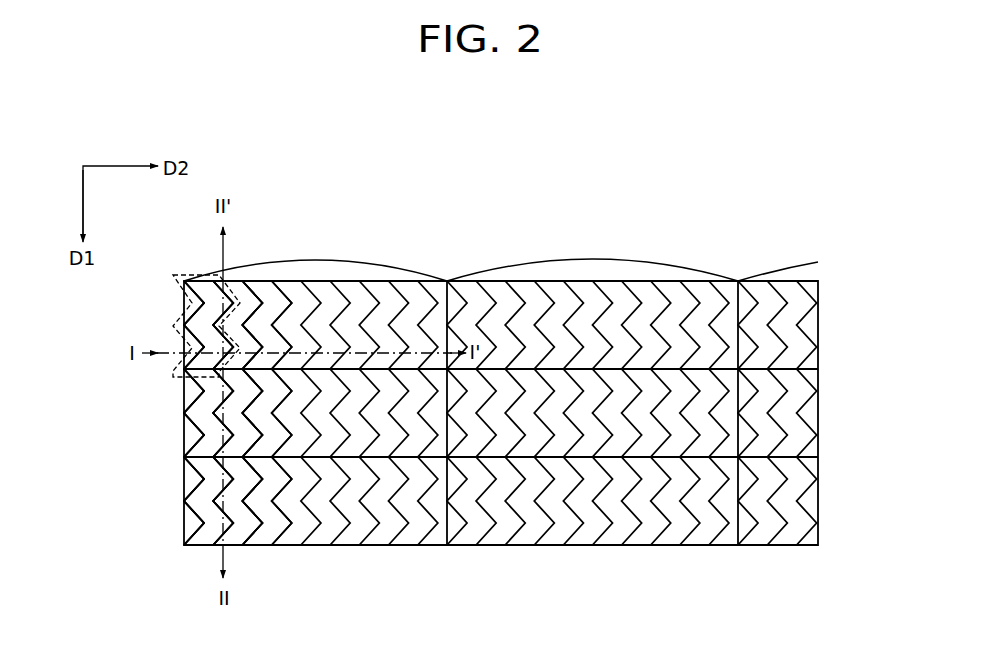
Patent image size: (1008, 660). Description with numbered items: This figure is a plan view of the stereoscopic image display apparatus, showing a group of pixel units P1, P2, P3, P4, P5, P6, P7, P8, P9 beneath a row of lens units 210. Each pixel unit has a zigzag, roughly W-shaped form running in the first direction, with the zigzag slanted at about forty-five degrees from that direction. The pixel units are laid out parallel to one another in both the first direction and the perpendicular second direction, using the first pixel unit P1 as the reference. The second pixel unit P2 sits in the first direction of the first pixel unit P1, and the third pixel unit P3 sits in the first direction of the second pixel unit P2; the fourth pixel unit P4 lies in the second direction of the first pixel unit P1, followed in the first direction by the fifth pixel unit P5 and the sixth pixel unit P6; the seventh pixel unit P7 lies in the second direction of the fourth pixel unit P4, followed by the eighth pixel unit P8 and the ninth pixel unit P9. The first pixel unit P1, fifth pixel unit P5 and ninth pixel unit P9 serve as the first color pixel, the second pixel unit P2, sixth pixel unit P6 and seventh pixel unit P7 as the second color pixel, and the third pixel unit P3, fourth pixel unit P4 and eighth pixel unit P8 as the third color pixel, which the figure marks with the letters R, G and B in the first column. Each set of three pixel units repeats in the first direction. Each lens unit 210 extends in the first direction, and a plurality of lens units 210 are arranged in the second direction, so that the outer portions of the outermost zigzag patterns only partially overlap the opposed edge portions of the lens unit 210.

The lens unit 210 is at (321, 266).
The first pixel unit P1 is at (183, 318).
The second pixel unit P2 is at (183, 407).
The third pixel unit P3 is at (186, 498).
The fourth pixel unit P4 is at (248, 305).
The fifth pixel unit P5 is at (245, 448).
The sixth pixel unit P6 is at (238, 536).
The seventh pixel unit P7 is at (273, 308).
The eighth pixel unit P8 is at (270, 443).
The ninth pixel unit P9 is at (271, 531).
The red sub-pixel R is at (195, 325).
The green sub-pixel G is at (196, 413).
The blue sub-pixel B is at (196, 501).